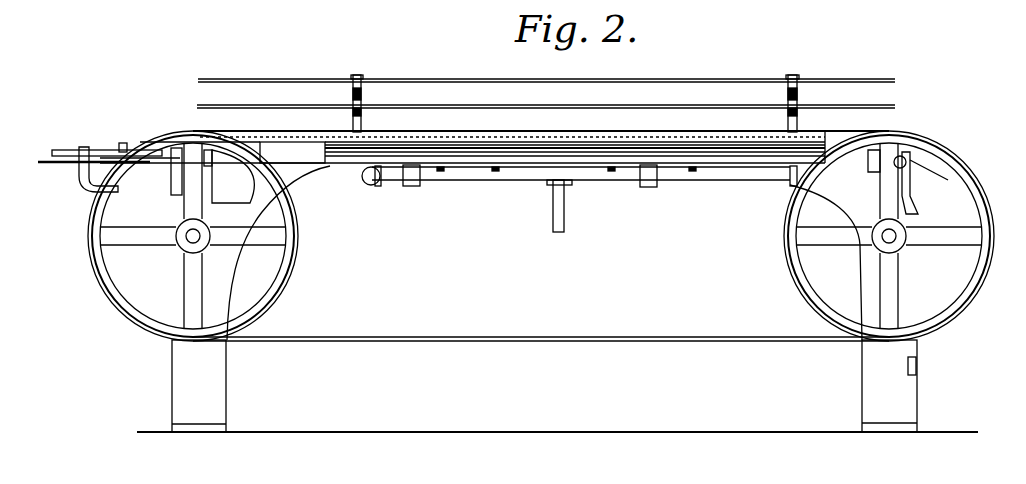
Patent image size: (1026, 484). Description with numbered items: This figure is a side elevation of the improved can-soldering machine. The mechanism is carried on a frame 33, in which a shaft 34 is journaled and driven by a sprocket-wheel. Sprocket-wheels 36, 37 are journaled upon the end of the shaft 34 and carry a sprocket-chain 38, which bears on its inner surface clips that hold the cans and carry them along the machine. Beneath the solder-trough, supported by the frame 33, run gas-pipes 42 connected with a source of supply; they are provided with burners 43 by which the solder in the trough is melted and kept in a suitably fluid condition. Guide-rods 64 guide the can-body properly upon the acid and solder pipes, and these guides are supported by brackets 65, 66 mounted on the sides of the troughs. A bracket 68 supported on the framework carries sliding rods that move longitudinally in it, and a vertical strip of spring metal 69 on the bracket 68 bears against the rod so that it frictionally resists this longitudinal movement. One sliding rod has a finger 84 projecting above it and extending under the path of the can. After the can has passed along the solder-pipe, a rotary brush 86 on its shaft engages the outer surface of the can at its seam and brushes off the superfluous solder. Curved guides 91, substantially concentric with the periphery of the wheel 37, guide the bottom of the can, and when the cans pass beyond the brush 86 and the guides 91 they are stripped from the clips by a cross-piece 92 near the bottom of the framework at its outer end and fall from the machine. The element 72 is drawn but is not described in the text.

The frame 33 is at (213, 257).
The shaft 34 is at (190, 237).
The sprocket-wheel 36 is at (100, 208).
The sprocket-wheel 37 is at (977, 200).
The sprocket-chain 38 is at (486, 342).
The gas-pipes 42 is at (555, 198).
The burners 43 is at (495, 171).
The guide-rods 64 is at (640, 83).
The bracket 65 is at (353, 90).
The bracket 66 is at (353, 117).
The bracket 68 is at (85, 147).
The vertical strip of spring metal 69 is at (137, 165).
The rod 72 is at (50, 163).
The finger 84 is at (125, 142).
The rotary brush 86 is at (903, 166).
The curved guides 91 is at (948, 180).
The cross-piece 92 is at (906, 362).